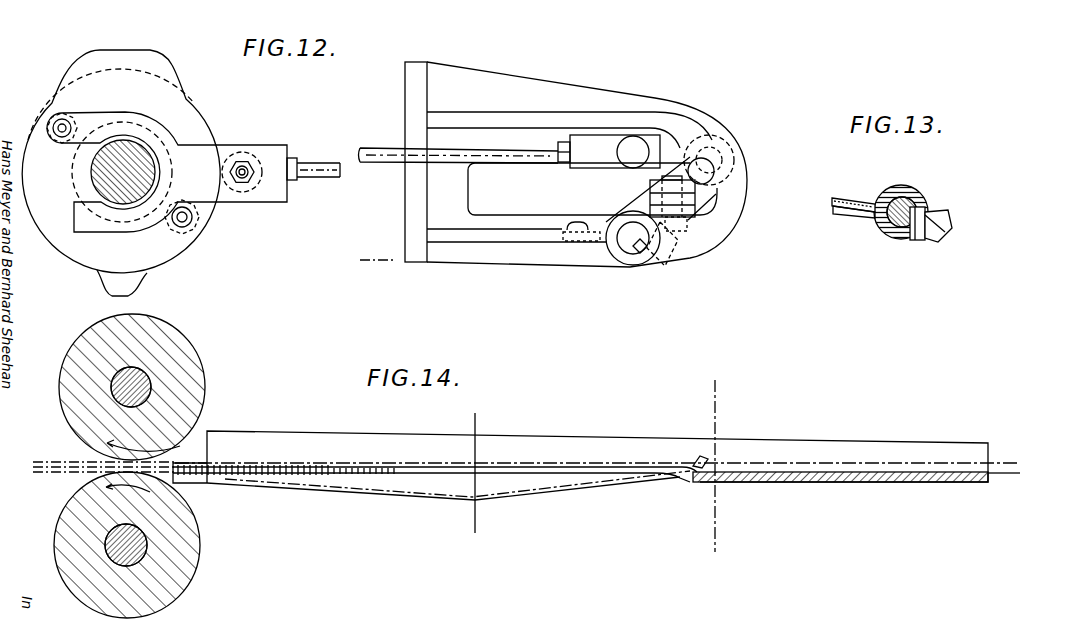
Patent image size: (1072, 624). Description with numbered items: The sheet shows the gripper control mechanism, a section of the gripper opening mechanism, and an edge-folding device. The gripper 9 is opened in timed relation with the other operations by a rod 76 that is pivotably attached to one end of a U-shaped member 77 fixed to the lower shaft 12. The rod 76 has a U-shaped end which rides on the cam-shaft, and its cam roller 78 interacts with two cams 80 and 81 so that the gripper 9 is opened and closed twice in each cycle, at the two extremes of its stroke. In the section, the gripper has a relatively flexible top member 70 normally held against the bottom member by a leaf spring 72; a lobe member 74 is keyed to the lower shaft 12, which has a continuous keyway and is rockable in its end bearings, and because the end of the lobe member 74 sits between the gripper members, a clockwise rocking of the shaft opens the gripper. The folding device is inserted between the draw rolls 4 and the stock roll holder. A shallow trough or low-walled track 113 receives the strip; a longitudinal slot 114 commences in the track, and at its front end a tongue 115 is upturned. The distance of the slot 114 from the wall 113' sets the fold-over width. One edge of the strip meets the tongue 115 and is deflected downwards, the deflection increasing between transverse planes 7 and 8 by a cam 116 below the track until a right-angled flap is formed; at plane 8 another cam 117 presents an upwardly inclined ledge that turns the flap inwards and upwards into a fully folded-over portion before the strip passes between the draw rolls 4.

In FIG. 14, the draw rolls 4 is at (72, 395).
In FIG. 14, the transverse plane 7— 7 is at (714, 467).
In FIG. 14, the transverse plane 8— 8 is at (473, 475).
In FIG. 12, the gripper 9 is at (565, 233).
In FIG. 12, the lower shaft 12 is at (632, 238).
In FIG. 13, the lower shaft 12 is at (920, 205).
In FIG. 13, the top member 70 is at (838, 215).
In FIG. 13, the leaf spring 72 is at (850, 198).
In FIG. 12, the lobe member 74 is at (593, 243).
In FIG. 13, the lobe member 74 is at (903, 190).
In FIG. 12, the rod 76 is at (380, 150).
In FIG. 12, the U-shaped member 77 is at (733, 198).
In FIG. 12, the cam roller 78 is at (248, 152).
In FIG. 12, the cam 80 is at (185, 123).
In FIG. 12, the cam 81 is at (123, 283).
In FIG. 14, the track 113 is at (856, 507).
In FIG. 14, the wall of the track 113' is at (593, 445).
In FIG. 14, the longitudinal slot 114 is at (703, 478).
In FIG. 14, the tongue 115 is at (707, 460).
In FIG. 14, the cam 116 is at (553, 483).
In FIG. 14, the cam 117 is at (315, 482).